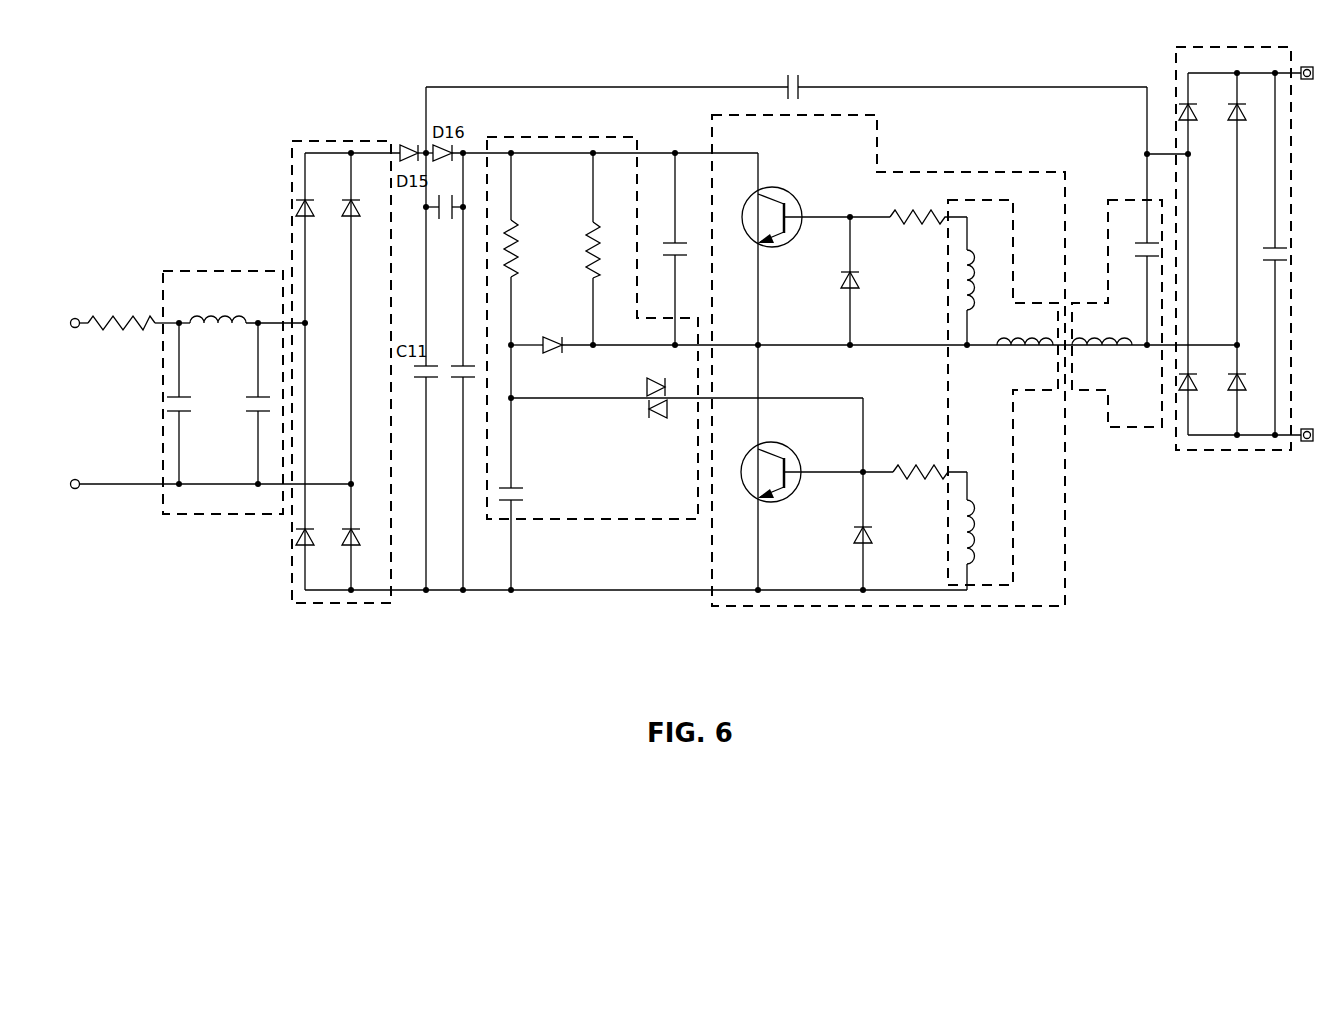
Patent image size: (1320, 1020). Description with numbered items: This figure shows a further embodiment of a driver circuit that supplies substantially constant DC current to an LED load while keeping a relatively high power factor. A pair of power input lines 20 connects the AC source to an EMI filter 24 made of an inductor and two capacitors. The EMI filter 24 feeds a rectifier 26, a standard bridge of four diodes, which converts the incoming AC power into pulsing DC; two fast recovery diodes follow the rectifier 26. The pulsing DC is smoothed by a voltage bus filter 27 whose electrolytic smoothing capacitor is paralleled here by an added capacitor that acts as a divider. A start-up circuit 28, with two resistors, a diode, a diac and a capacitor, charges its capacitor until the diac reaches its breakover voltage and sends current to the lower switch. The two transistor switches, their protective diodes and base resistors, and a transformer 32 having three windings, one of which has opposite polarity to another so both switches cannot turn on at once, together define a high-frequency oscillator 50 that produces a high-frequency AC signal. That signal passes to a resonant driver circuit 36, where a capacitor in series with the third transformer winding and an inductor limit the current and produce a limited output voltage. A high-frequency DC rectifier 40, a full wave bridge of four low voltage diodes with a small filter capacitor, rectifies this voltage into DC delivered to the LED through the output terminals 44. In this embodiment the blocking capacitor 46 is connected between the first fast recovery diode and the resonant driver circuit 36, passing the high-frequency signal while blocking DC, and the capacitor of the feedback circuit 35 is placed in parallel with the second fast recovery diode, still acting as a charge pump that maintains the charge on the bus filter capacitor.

The power input lines 20 is at (80, 328).
The electromagnetic interference (EMI) filter 24 is at (232, 516).
The rectifier 26 is at (340, 605).
The voltage bus filter 27 is at (456, 390).
The start-up circuit 28 is at (582, 521).
The transformer 32 is at (1026, 400).
The feedback circuit 35 is at (449, 185).
The resonant driver circuit 36 is at (1118, 430).
The high-frequency DC rectifier 40 is at (1196, 452).
The output terminals 44 is at (1301, 62).
The blocking capacitor 46 is at (781, 40).
The high-frequency oscillator 50 is at (780, 608).